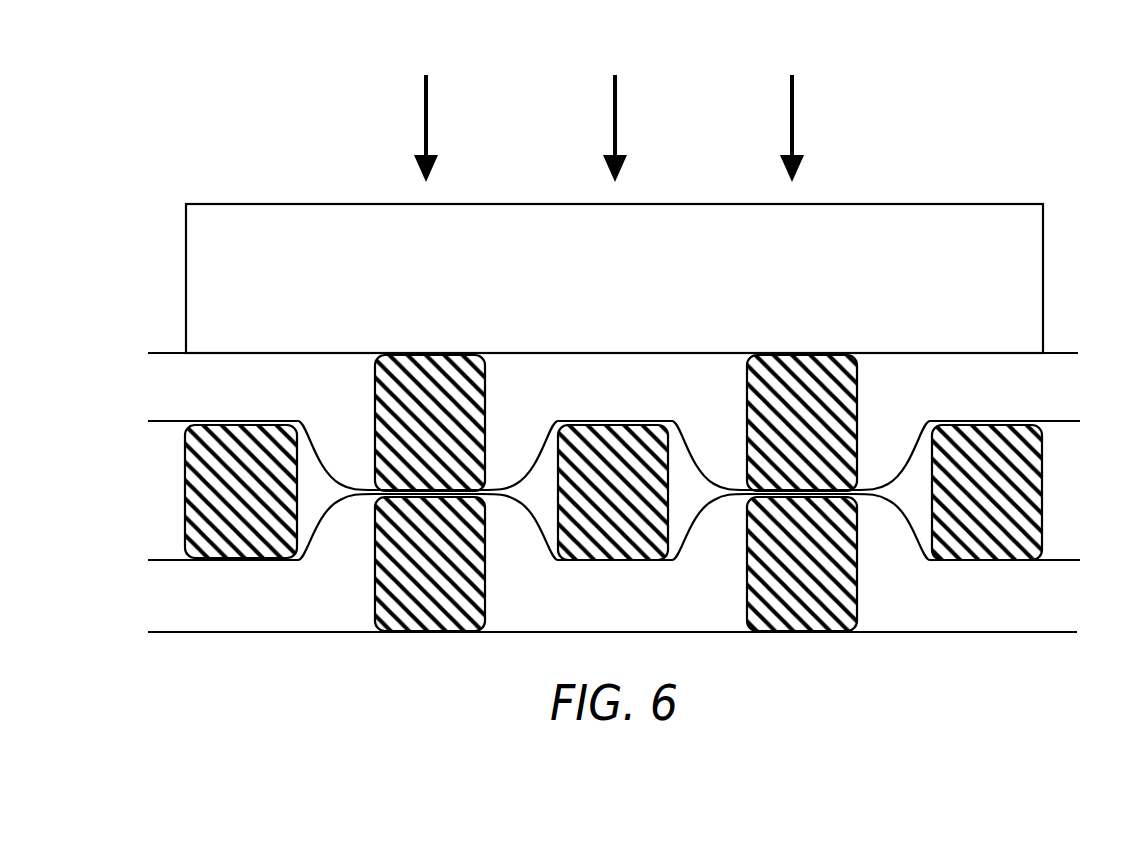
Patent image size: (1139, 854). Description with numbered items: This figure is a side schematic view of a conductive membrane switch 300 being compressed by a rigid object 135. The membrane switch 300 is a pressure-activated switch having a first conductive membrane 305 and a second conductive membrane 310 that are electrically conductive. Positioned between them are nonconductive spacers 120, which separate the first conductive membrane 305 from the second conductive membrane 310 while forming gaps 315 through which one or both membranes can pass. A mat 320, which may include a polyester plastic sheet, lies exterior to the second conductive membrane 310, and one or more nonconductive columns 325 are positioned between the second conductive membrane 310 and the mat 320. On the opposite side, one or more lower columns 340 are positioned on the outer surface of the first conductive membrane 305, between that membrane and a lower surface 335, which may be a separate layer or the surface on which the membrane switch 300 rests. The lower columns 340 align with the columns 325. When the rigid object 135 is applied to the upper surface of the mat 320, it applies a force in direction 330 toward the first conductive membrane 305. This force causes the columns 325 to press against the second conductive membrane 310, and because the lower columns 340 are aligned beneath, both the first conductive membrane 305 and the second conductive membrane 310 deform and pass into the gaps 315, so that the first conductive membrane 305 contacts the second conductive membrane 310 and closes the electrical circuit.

The spacers 120 is at (185, 500).
The rigid object 135 is at (887, 203).
The conductive membrane switch 300 is at (140, 451).
The first conductive membrane 305 is at (167, 560).
The second conductive membrane 310 is at (172, 421).
The gaps 315 is at (512, 540).
The mat 320 is at (990, 355).
The columns 325 is at (375, 417).
The direction 330 is at (423, 128).
The lower surface 335 is at (287, 633).
The lower columns 340 is at (375, 562).